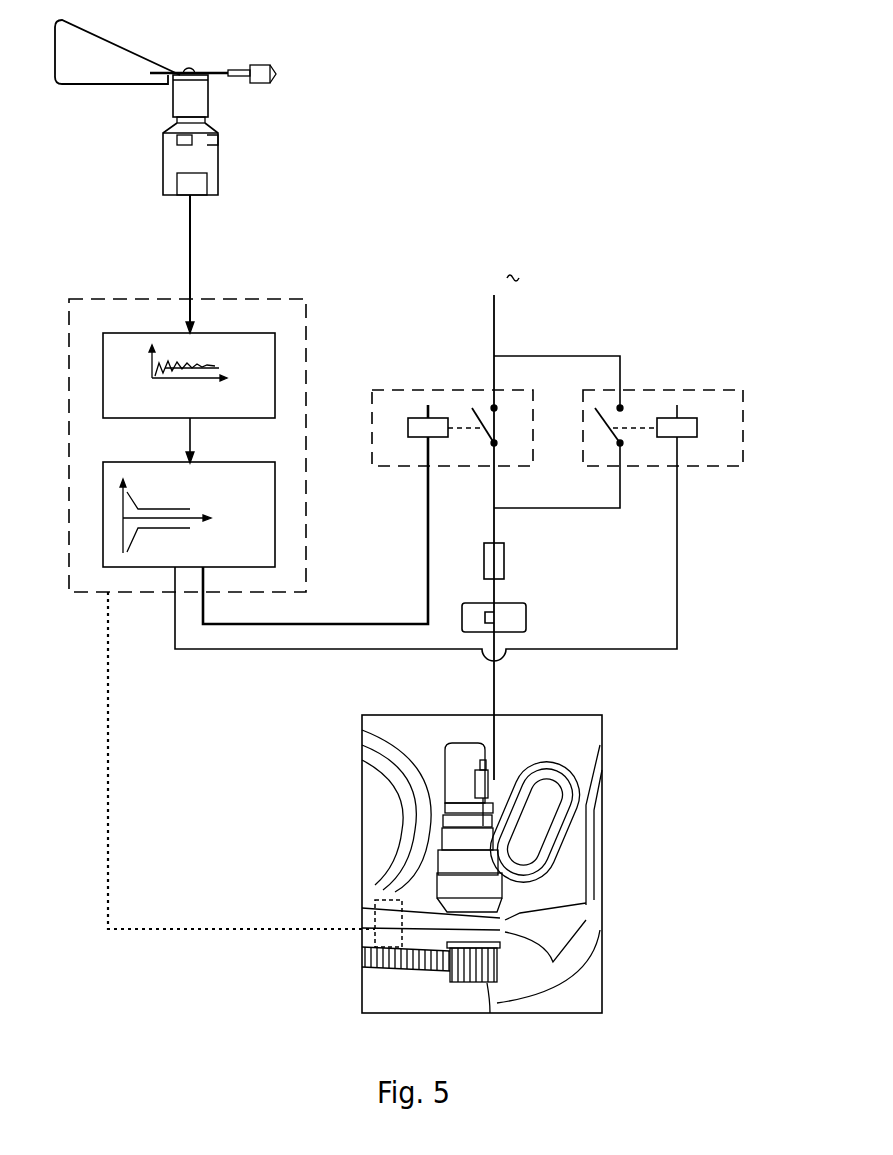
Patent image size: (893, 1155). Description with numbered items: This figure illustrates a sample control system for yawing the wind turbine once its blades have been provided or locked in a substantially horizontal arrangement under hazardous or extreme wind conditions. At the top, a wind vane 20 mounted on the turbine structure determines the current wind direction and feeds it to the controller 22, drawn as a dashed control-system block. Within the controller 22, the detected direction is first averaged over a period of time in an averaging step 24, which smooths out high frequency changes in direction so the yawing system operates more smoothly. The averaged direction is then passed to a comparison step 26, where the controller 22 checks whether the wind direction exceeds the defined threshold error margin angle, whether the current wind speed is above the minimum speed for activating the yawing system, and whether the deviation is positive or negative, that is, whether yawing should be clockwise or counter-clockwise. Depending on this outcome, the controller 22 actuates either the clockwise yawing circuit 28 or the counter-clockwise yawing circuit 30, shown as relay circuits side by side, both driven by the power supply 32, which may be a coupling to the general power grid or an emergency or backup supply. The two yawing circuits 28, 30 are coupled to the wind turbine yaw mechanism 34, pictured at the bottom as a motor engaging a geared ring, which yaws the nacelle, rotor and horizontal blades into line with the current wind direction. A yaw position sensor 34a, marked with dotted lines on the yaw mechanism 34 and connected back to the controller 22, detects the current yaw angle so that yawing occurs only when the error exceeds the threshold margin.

The wind vane 20 is at (200, 100).
The controller 22 is at (204, 418).
The averaging step 24 is at (189, 364).
The comparison step 26 is at (189, 502).
The CW yawing circuit 28 is at (431, 360).
The CCW yawing circuit 30 is at (729, 332).
The power supply 32 is at (525, 246).
The wind turbine yaw mechanism 34 is at (450, 767).
The yaw position sensor 34a is at (388, 900).